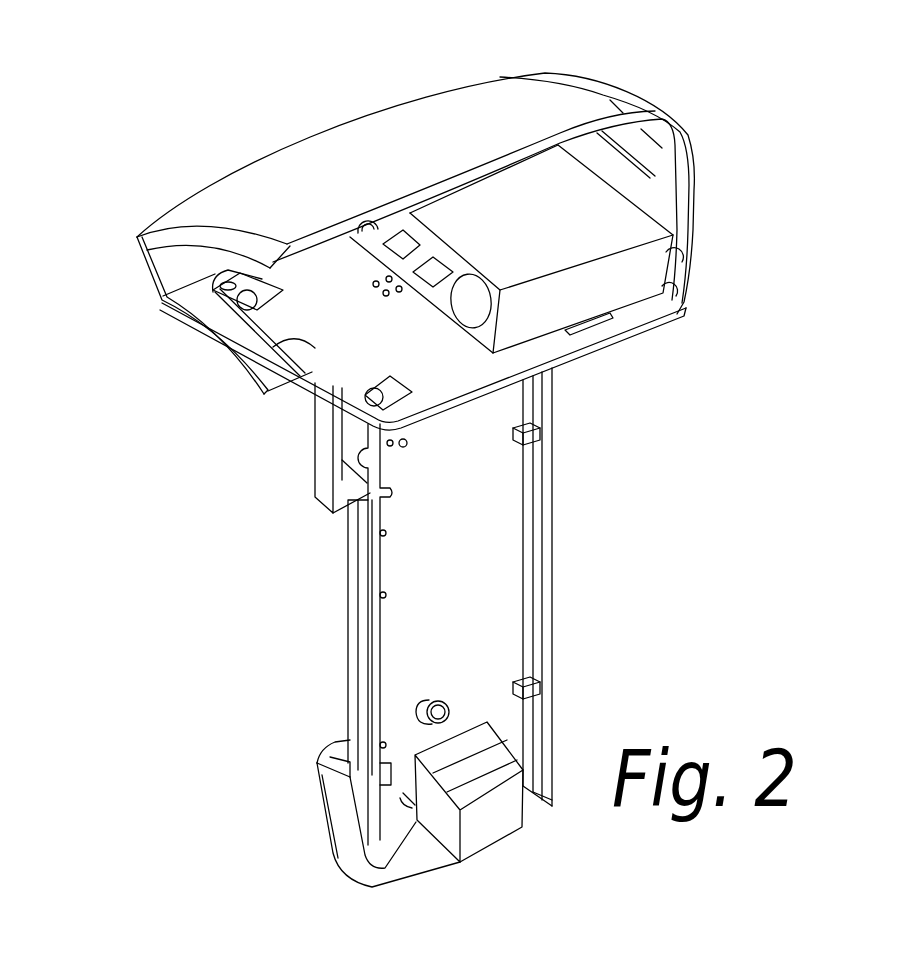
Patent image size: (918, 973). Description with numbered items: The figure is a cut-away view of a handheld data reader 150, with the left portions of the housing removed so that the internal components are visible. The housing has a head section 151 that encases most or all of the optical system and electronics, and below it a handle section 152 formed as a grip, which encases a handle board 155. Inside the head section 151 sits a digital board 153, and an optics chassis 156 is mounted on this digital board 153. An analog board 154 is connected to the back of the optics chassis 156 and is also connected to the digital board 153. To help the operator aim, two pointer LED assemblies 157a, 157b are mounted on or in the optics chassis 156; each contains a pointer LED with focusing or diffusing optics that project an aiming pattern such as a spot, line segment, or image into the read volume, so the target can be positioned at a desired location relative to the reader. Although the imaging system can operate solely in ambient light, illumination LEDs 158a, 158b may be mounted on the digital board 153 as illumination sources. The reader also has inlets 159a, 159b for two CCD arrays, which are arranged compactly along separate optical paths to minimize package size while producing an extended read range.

The handheld data reader 150 is at (212, 150).
The head section 151 is at (195, 200).
The handle section 152 is at (556, 539).
The digital board 153 is at (277, 343).
The analog board 154 is at (683, 212).
The handle board 155 is at (393, 652).
The optics chassis 156 is at (533, 182).
The pointer LED assembly 157a is at (470, 303).
The pointer LED assembly 157b is at (330, 277).
The illumination LED 158a is at (398, 391).
The illumination LED 158b is at (223, 333).
The inlet 159a is at (437, 278).
The inlet 159b is at (417, 233).